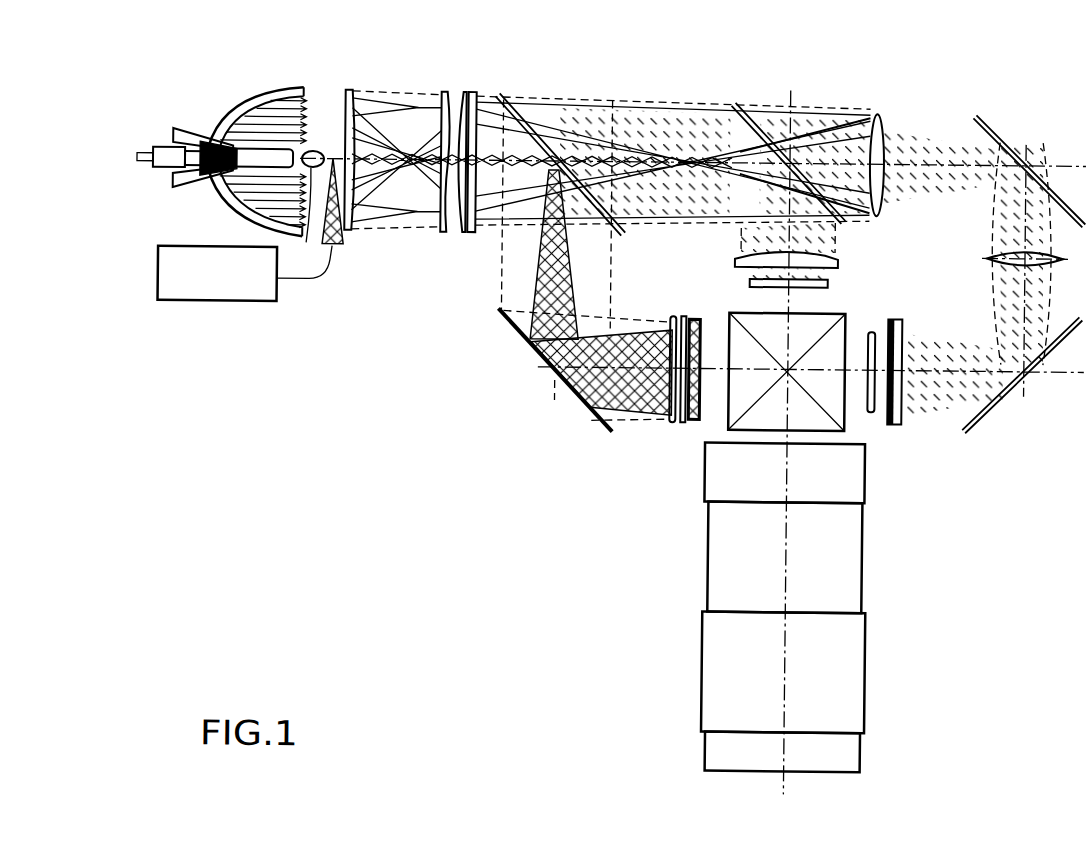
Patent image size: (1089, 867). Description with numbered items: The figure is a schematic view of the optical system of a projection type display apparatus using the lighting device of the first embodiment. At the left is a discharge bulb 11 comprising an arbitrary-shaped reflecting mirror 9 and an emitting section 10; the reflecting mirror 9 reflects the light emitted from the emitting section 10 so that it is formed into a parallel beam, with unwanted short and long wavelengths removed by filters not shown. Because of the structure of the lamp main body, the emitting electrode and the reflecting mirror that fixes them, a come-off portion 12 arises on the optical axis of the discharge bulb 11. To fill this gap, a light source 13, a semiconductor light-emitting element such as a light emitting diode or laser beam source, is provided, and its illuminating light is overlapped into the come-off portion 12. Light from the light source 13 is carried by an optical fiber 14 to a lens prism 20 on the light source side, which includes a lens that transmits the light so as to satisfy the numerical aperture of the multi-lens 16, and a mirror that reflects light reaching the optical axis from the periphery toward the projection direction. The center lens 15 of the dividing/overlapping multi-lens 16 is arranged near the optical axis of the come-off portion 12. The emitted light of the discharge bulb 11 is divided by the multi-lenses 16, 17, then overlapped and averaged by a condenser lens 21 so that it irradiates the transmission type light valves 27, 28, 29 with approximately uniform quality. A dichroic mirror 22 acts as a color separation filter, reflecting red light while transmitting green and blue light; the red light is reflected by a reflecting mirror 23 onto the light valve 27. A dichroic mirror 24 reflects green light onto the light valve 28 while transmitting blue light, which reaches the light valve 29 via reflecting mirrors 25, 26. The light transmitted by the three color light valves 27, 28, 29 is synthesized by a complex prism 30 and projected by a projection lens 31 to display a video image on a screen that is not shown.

The arbitrary-shaped reflecting mirror 9 is at (259, 223).
The emitting section 10 is at (218, 135).
The discharge bulb 11 is at (287, 88).
The come-off portion 12 is at (312, 219).
The light source 13 is at (241, 305).
The optical fiber 14 is at (329, 287).
The center lens 15 is at (368, 187).
The multi-lens 16 is at (352, 96).
The multi-lens 17 is at (441, 96).
The lens prism 20 is at (317, 155).
The condenser lens 21 is at (476, 93).
The dichroic mirror 22 is at (505, 104).
The reflecting mirror 23 is at (602, 421).
The dichroic mirror 24 is at (738, 108).
The reflecting mirror 25 is at (989, 128).
The reflecting mirror 26 is at (979, 424).
The light valve 27 is at (698, 418).
The light valve 28 is at (823, 285).
The light valve 29 is at (875, 412).
The complex prism 30 is at (735, 316).
The projection lens 31 is at (714, 533).